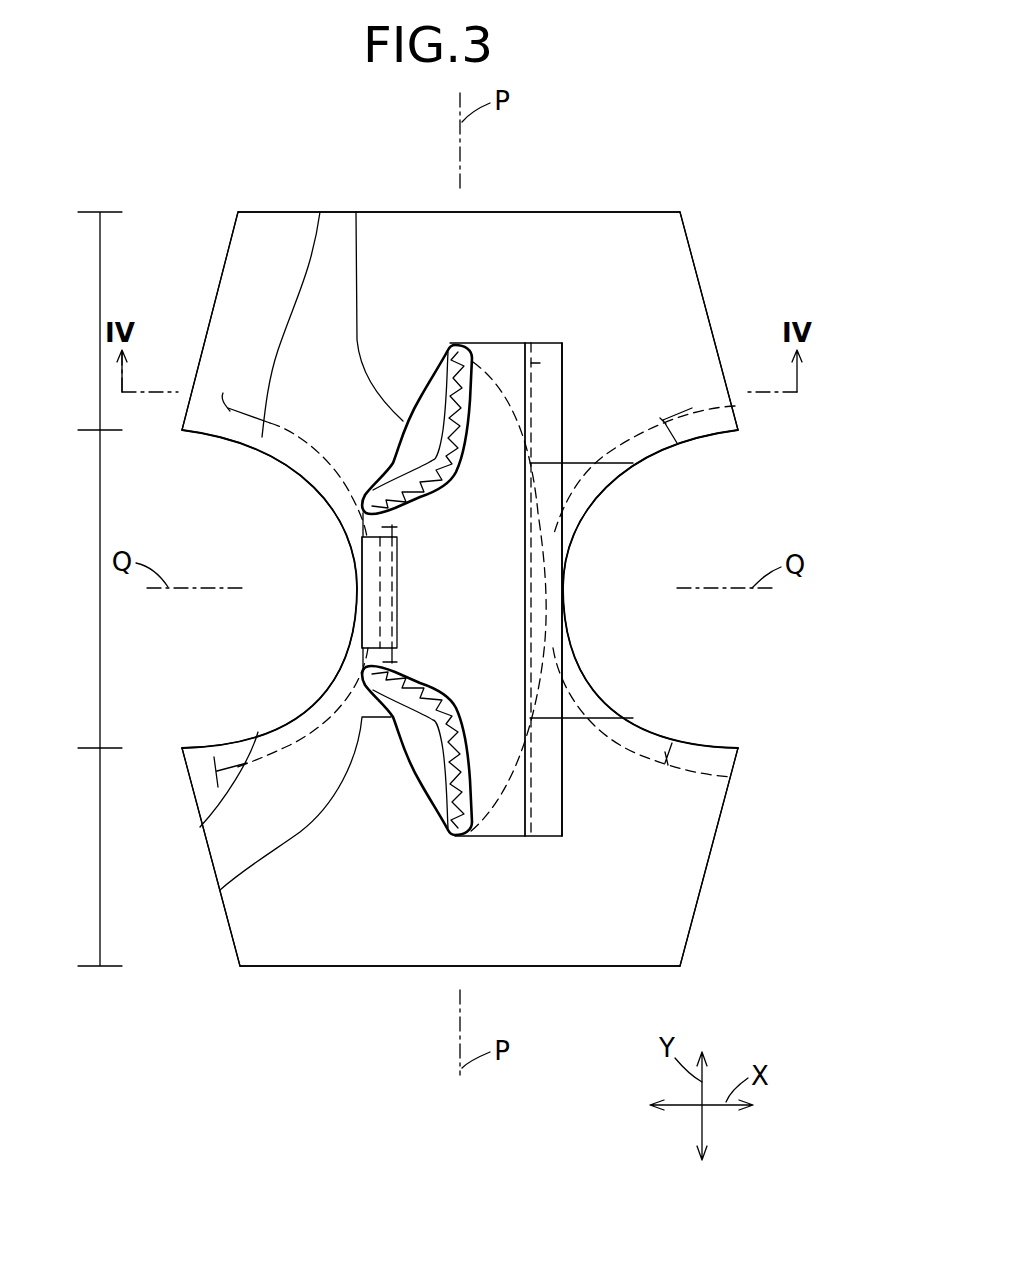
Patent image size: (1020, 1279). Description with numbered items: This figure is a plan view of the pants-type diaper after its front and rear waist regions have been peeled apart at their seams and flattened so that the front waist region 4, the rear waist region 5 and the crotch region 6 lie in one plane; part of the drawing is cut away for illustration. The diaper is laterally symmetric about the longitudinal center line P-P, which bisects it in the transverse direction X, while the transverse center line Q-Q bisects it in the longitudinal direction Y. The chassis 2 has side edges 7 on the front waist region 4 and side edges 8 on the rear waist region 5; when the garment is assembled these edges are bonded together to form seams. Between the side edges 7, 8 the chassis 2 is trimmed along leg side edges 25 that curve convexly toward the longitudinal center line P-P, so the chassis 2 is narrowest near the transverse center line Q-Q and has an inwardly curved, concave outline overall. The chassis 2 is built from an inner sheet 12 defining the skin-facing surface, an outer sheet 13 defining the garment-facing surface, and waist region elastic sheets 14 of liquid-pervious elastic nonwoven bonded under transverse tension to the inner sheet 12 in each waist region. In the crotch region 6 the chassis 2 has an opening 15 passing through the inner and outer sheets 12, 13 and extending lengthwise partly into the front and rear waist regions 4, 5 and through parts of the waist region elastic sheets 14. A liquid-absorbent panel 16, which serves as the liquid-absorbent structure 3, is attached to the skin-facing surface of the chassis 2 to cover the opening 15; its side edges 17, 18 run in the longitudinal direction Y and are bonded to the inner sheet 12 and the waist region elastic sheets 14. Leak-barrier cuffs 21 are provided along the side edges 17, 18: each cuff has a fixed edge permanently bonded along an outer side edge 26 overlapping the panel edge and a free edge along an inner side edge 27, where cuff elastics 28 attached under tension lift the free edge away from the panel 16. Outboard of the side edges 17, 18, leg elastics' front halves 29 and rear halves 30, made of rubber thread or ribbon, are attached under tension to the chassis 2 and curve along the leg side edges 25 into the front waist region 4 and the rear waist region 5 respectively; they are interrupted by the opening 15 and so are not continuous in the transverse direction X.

The chassis 2 is at (722, 213).
The liquid-absorbent structure 3 is at (522, 340).
The front waist region 4 is at (100, 850).
The rear waist region 5 is at (100, 291).
The crotch region 6 is at (100, 590).
The side edges of the front waist region 7 is at (221, 907).
The side edges of the rear waist region 8 is at (222, 268).
The inner sheet 12 is at (202, 797).
The outer sheet 13 is at (220, 845).
The waist region elastic sheets 14 is at (407, 212).
The opening 15 is at (422, 773).
The liquid-absorbent panel 16 is at (485, 353).
The side edge of the liquid-absorbent panel 17 is at (356, 597).
The side edge of the liquid-absorbent panel 18 is at (563, 532).
The leak-barrier cuffs 21 is at (352, 636).
The leg side edges 25 is at (323, 506).
The outer side edges 26 is at (366, 565).
The inner side edges 27 is at (395, 572).
The cuff elastics 28 is at (393, 528).
The leg elastics' front halves 29 is at (247, 762).
The leg elastics' rear halves 30 is at (245, 414).